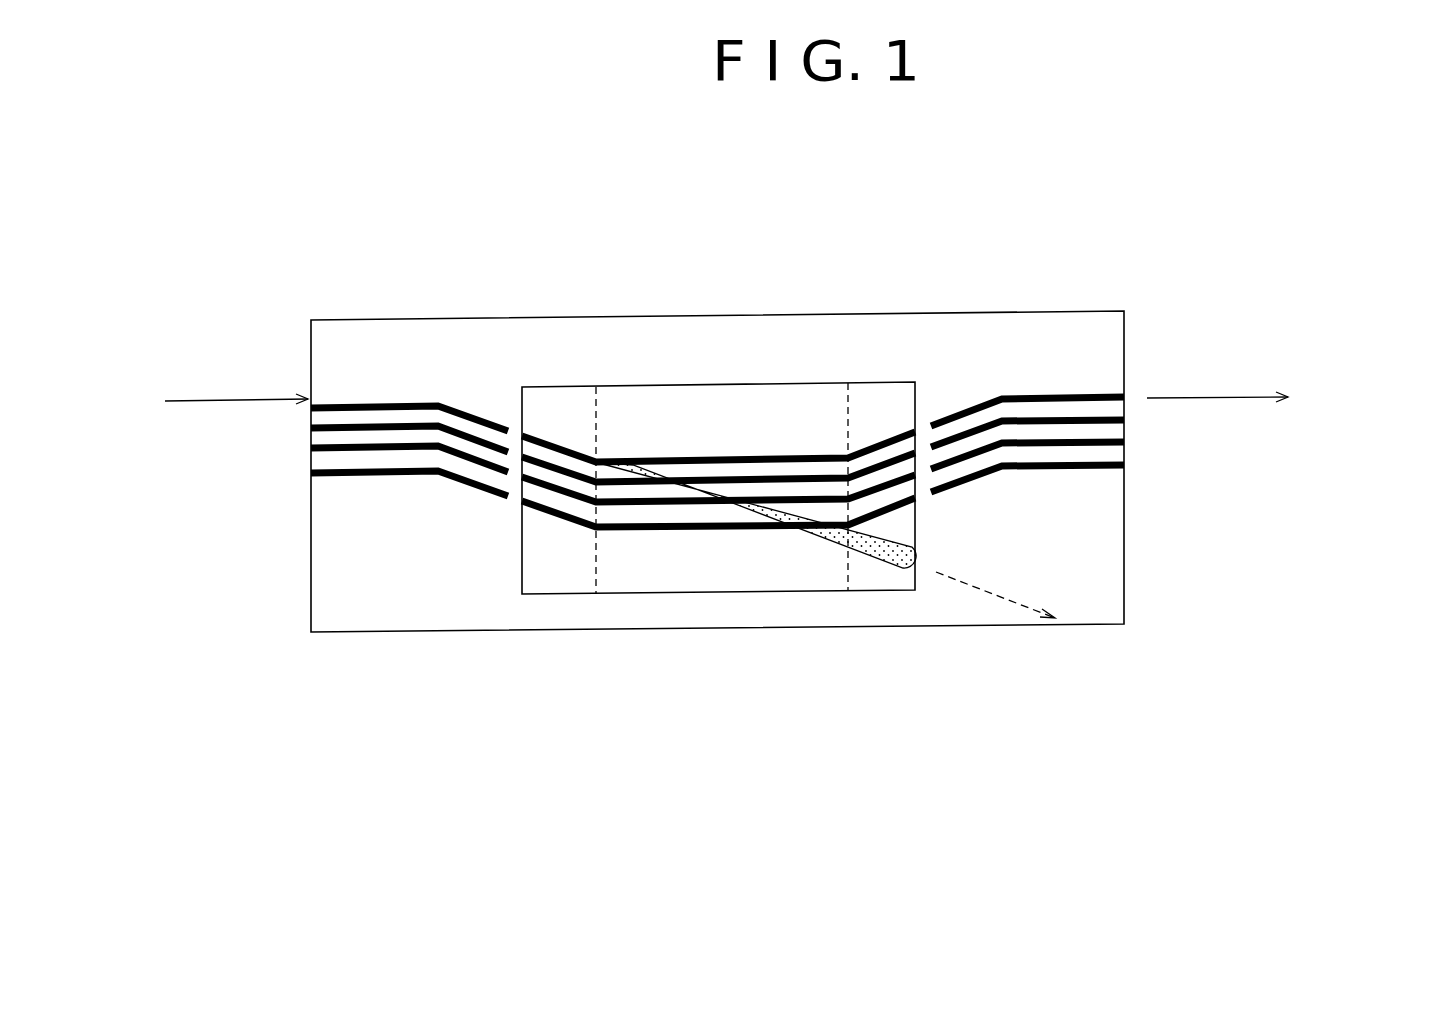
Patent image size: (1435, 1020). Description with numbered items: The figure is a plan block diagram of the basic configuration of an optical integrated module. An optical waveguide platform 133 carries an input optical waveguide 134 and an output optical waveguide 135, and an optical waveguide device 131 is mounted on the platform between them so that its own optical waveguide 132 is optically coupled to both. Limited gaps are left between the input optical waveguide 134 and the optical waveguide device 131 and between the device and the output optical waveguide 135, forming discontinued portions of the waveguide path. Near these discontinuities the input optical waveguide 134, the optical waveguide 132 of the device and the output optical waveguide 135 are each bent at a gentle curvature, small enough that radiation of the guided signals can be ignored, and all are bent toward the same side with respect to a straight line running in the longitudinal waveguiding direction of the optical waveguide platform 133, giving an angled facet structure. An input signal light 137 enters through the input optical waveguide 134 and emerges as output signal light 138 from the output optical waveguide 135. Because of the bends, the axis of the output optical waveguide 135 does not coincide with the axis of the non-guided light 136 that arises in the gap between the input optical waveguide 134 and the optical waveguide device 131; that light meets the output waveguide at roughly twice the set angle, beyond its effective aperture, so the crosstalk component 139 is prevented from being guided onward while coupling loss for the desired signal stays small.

The optical waveguide device 131 is at (596, 383).
The optical waveguide 132 is at (790, 415).
The optical waveguide platform 133 is at (327, 318).
The input optical waveguide 134 is at (402, 360).
The output optical waveguide 135 is at (1053, 375).
The non-guided light 136 is at (848, 543).
The input optical signal 137 is at (203, 436).
The output signal light 138 is at (1185, 398).
The crosstalk component 139 is at (992, 593).